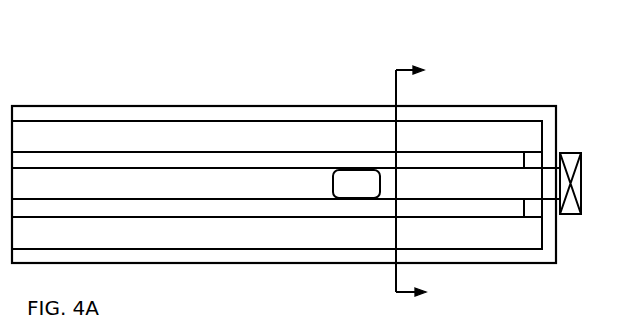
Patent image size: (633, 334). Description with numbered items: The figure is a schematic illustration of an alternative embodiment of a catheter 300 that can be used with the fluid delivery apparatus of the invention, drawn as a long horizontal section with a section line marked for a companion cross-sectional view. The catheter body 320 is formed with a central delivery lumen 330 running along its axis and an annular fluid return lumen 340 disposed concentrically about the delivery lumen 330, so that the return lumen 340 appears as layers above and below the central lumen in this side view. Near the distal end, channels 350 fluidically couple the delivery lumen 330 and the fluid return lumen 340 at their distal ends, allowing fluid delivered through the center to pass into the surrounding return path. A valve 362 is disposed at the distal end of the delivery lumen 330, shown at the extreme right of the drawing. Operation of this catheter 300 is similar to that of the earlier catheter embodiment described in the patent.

The catheter 300 is at (330, 64).
The catheter body 320 is at (89, 98).
The central delivery lumen 330 is at (223, 180).
The annular fluid return lumen 340 is at (221, 237).
The channels 350 is at (533, 158).
The valve 362 is at (568, 153).